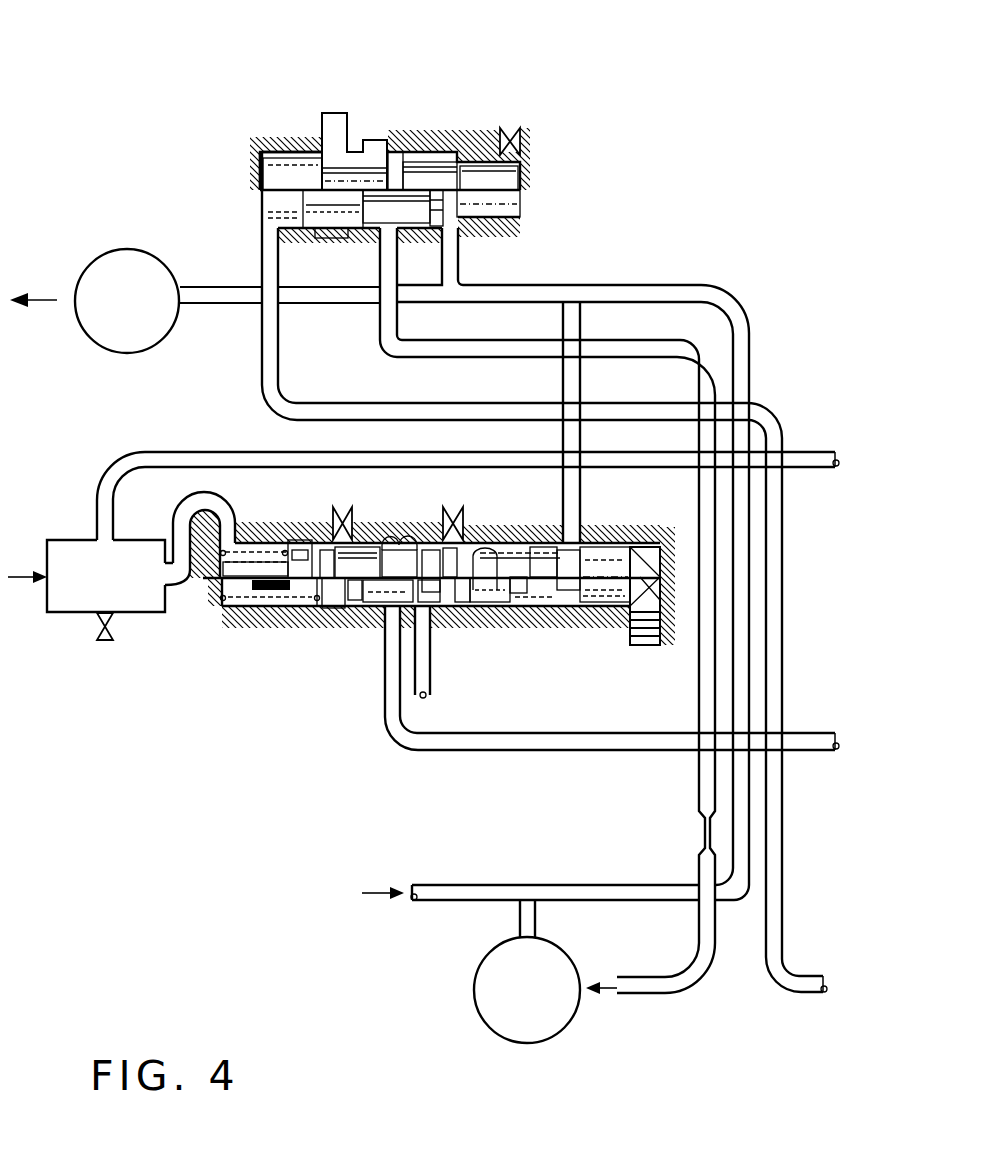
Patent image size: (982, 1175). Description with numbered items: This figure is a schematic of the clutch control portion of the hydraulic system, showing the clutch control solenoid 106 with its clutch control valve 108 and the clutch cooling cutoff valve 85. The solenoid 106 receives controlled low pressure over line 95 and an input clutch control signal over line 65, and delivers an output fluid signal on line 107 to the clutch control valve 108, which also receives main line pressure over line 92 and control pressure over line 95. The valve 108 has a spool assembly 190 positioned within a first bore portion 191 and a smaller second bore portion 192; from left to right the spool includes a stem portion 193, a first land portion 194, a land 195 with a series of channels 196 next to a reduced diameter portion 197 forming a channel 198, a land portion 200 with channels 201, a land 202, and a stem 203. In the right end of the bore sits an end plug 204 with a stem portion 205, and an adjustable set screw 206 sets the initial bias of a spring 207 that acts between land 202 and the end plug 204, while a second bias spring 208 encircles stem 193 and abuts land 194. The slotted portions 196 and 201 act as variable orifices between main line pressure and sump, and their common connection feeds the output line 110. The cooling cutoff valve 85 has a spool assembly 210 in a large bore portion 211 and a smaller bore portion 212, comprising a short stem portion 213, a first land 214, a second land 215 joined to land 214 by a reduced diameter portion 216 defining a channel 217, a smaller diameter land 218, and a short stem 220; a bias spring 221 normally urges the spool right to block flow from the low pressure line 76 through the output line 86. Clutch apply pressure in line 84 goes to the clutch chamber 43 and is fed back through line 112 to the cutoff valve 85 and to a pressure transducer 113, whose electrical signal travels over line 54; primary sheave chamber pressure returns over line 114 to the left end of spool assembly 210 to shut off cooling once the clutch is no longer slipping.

The clutch chamber 43 is at (482, 1020).
The line 54 is at (42, 302).
The line 65 is at (30, 575).
The line 76 is at (346, 116).
The line 84 is at (465, 887).
The clutch cooling cutoff valve 85 is at (513, 85).
The output line 86 is at (398, 312).
The line 92 is at (790, 751).
The line 95 is at (95, 507).
The solenoid 106 is at (110, 590).
The line 107 is at (172, 592).
The clutch control valve 108 is at (439, 623).
The line 110 is at (422, 698).
The line 112 is at (570, 292).
The pressure transducer 113 is at (218, 301).
The line 114 is at (262, 347).
The spool assembly 190 is at (477, 543).
The first bore portion 191 is at (262, 540).
The second bore portion 192 is at (577, 547).
The stem portion 193 is at (290, 612).
The first land portion 194 is at (335, 612).
The land 195 is at (378, 608).
The channels 196 is at (367, 540).
The reduced diameter portion 197 is at (440, 612).
The channel 198 is at (412, 540).
The land portion 200 is at (468, 605).
The channels 201 is at (470, 540).
The land 202 is at (515, 603).
The stem 203 is at (540, 605).
The end plug 204 is at (622, 604).
The stem portion 205 is at (580, 606).
The adjustable set screw 206 is at (650, 645).
The spring 207 is at (537, 543).
The second bias spring 208 is at (240, 612).
The spool assembly 210 is at (308, 238).
The first, large diameter portion 211 is at (258, 170).
The second, smaller diameter portion 212 is at (505, 160).
The short stem portion 213 is at (262, 201).
The first land 214 is at (283, 152).
The second land 215 is at (395, 152).
The reduced diameter portion 216 is at (305, 152).
The channel 217 is at (403, 208).
The smaller diameter land 218 is at (497, 225).
The short stem 220 is at (522, 200).
The bias spring 221 is at (262, 220).